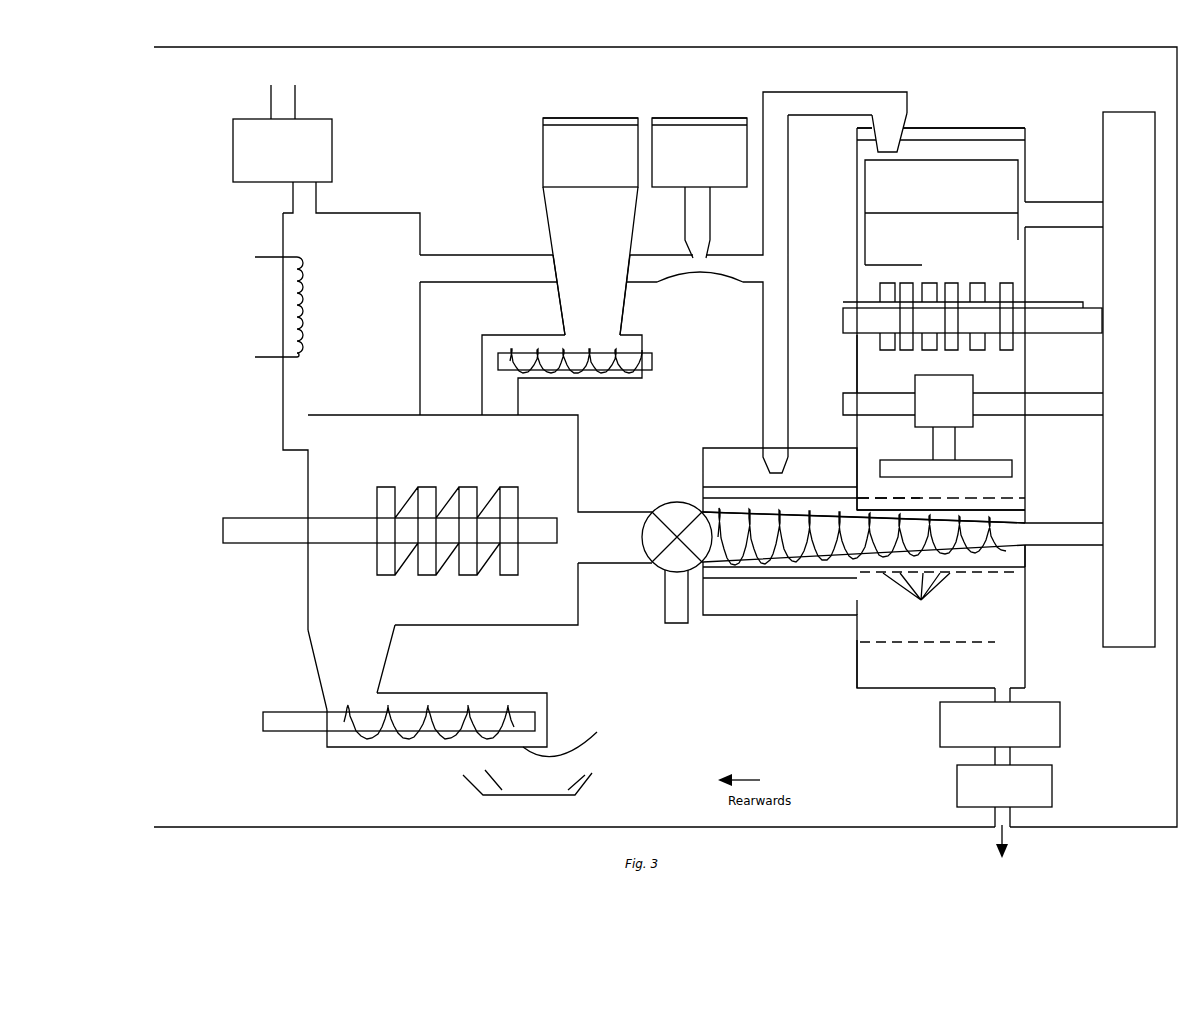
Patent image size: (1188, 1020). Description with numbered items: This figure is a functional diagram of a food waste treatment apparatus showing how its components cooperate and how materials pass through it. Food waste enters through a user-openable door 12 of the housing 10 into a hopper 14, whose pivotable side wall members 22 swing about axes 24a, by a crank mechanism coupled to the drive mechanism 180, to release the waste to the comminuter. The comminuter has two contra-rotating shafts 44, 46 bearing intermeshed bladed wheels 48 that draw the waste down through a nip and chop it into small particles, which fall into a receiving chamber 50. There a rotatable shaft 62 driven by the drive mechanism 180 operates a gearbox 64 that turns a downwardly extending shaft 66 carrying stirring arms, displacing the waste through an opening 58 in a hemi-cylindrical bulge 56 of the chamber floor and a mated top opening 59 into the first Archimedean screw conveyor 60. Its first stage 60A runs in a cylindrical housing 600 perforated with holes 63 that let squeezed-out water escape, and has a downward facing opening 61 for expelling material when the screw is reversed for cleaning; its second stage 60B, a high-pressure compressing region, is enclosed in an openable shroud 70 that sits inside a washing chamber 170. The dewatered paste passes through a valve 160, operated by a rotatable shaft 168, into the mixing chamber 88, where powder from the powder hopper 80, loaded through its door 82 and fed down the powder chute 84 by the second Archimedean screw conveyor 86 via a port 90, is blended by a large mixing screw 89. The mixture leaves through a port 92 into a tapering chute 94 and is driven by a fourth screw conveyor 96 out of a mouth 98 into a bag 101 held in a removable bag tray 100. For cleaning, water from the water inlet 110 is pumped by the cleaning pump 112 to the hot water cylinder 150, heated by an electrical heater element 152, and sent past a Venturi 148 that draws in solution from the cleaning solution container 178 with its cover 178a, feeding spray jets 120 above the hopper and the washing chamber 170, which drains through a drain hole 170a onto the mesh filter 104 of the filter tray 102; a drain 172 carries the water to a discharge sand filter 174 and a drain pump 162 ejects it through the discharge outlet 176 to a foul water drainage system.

The housing 10 is at (665, 437).
The water inlet 110 is at (283, 92).
The cleaning pump 112 is at (326, 187).
The electrical heater element 152 is at (250, 307).
The hot water cylinder 150 is at (420, 421).
The powder hopper 80 is at (590, 226).
The user-openable door 82 is at (590, 118).
The powder chute 84 is at (591, 295).
The cleaning solution container 178 is at (699, 188).
The user openable cover 178a is at (700, 118).
The Venturi 148 is at (698, 283).
The spray jets 120 is at (870, 144).
The hopper 14 is at (941, 408).
The user-openable door 12 is at (957, 128).
The axes 24a is at (918, 213).
The pivotable side wall members 22 is at (1022, 195).
The shaft 44 is at (972, 320).
The shaft 46 is at (1040, 302).
The bladed wheels 48 is at (960, 281).
The receiving chamber 50 is at (857, 350).
The rotatable shaft 62 is at (973, 404).
The gearbox 64 is at (944, 401).
The downwardly extending shaft 66 is at (948, 444).
The opening 58 is at (975, 490).
The hemi-cylindrical bulge 56 is at (1025, 508).
The top opening 59 is at (918, 514).
The drive mechanism 180 is at (208, 721).
The second Archimedean screw conveyor 86 is at (598, 372).
The port 90 is at (505, 414).
The mixing chamber 88 is at (480, 520).
The mixing screw 89 is at (510, 487).
The port 92 is at (308, 630).
The tapering chute 94 is at (437, 702).
The fourth screw conveyor 96 is at (468, 693).
The mouth 98 is at (564, 735).
The bag tray 100 is at (590, 783).
The bag 101 is at (567, 775).
The valve 160 is at (655, 565).
The rotatable shaft 168 is at (688, 614).
The shroud 70 is at (725, 487).
The washing chamber 170 is at (864, 625).
The drain hole 170a is at (847, 614).
The first Archimedean screw conveyor 60 is at (838, 490).
The second stage 60B is at (798, 505).
The first stage 60A is at (1018, 558).
The downward facing opening 61 is at (978, 573).
The cylindrical housing 600 is at (980, 578).
The holes 63 is at (916, 594).
The filter tray 102 is at (913, 654).
The mesh filter 104 is at (998, 641).
The drain 172 is at (1012, 697).
The discharge sand filter 174 is at (1000, 733).
The drain pump 162 is at (1004, 796).
The discharge outlet 176 is at (1075, 835).